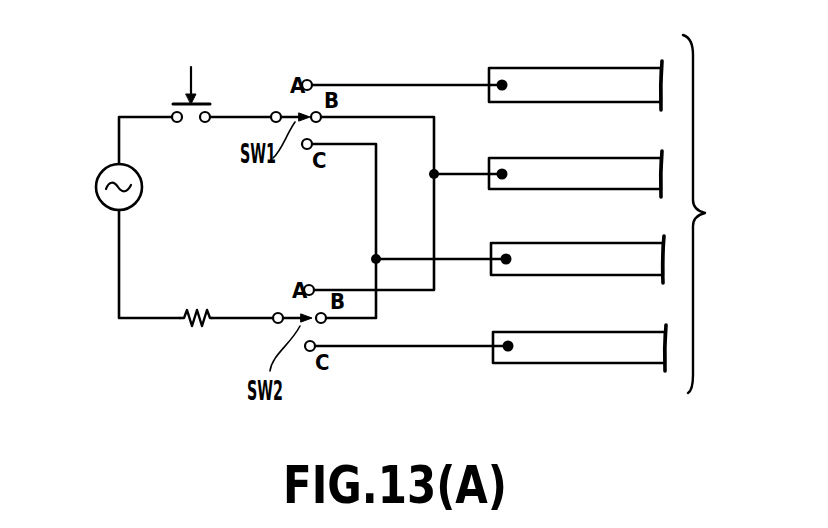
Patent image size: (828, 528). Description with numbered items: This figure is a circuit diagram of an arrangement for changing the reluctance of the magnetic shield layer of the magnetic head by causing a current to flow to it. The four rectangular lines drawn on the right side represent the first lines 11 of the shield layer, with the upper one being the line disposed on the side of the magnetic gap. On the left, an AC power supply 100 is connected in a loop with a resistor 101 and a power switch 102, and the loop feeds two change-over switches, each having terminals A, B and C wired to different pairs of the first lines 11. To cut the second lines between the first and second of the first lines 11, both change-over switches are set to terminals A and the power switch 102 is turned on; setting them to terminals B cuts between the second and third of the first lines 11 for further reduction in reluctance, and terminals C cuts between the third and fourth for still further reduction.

The AC power supply 100 is at (100, 209).
The resistor 101 is at (190, 326).
The power switch 102 is at (198, 96).
The first lines 11 is at (609, 214).